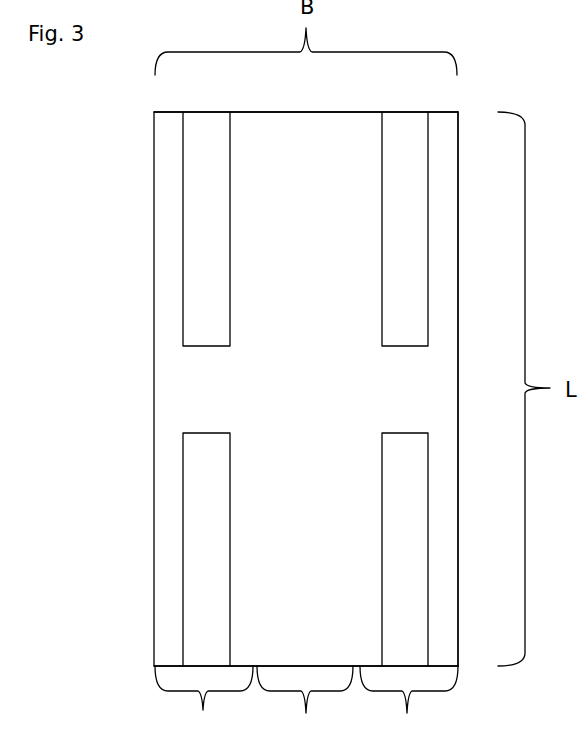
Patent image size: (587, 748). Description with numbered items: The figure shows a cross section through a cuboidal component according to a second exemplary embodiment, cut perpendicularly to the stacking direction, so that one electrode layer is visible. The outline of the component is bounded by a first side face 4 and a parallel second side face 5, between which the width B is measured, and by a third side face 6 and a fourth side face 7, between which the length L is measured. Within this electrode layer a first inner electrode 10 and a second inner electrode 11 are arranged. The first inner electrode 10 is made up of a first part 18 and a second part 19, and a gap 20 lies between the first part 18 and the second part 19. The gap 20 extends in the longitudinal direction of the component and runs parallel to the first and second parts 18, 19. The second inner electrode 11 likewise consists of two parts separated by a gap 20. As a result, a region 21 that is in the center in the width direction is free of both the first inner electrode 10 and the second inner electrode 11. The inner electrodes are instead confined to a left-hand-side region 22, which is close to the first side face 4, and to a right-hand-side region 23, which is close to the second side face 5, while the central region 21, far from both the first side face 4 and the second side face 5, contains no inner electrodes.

The first side face 4 is at (154, 276).
The second side face 5 is at (458, 255).
The third side face 6 is at (297, 112).
The fourth side face 7 is at (267, 665).
The first inner electrode 10 is at (227, 229).
The second inner electrode 11 is at (400, 474).
The first part 18 is at (207, 162).
The second part 19 is at (398, 192).
The gap 20 is at (312, 180).
The region in the center in the width direction 21 is at (305, 707).
The left-hand-side region 22 is at (204, 706).
The right-hand-side region 23 is at (409, 707).